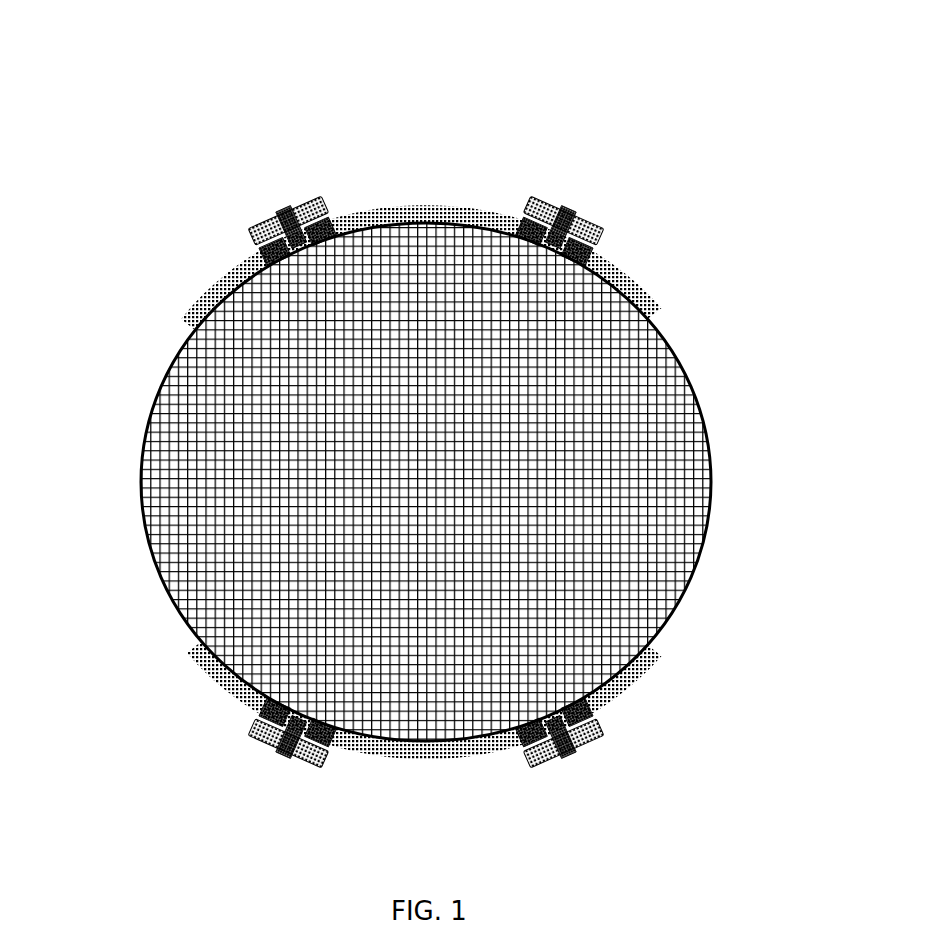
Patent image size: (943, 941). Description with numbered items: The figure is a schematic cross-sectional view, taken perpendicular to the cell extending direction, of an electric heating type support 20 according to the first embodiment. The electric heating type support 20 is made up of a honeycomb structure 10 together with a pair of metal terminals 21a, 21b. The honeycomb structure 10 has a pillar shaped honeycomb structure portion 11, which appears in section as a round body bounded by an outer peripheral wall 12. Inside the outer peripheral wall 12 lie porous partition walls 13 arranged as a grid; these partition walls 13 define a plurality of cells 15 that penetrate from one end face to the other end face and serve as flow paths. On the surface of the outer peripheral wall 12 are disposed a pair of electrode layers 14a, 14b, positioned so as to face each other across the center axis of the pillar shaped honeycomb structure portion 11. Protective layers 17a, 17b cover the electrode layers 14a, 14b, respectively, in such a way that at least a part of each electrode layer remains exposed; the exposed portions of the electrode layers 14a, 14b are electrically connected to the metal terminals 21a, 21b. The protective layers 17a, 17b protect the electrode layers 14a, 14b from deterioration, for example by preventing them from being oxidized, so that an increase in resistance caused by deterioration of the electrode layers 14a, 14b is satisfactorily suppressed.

The honeycomb structure 10 is at (639, 266).
The pillar shaped honeycomb structure portion 11 is at (685, 357).
The outer peripheral wall 12 is at (677, 583).
The porous partition walls 13 is at (172, 468).
The electrode layer 14a is at (263, 248).
The electrode layer 14b is at (248, 711).
The cells 15 is at (217, 417).
The protective layer 17a is at (195, 285).
The protective layer 17b is at (190, 663).
The electric heating type support 20 is at (347, 117).
The metal terminal 21a is at (277, 208).
The metal terminal 21b is at (283, 757).